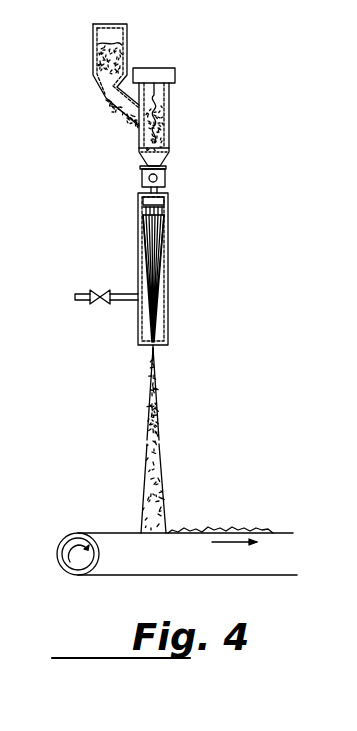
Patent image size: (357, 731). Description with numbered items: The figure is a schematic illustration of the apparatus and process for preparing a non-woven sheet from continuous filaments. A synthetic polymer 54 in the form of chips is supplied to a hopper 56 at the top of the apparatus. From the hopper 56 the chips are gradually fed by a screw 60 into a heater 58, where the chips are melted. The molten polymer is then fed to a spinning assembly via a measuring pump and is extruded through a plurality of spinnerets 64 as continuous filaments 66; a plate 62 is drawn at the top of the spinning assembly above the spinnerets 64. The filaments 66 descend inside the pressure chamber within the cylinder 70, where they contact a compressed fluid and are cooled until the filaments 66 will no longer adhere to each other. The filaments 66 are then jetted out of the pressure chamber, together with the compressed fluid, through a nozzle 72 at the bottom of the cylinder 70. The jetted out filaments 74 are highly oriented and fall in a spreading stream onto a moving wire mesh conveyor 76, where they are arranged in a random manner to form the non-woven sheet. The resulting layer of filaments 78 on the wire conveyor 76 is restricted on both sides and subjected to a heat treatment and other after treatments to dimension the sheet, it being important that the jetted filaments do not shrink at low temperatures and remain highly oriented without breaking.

The synthetic polymer 54 is at (112, 60).
The hopper 56 is at (127, 42).
The heater 58 is at (168, 148).
The screw 60 is at (165, 107).
The plate 62 is at (167, 200).
The spinnerets 64 is at (165, 212).
The filaments 66 is at (152, 250).
The cylinder 70 is at (167, 308).
The nozzle 72 is at (153, 348).
The jetted out filaments 74 is at (160, 438).
The wire mesh conveyor 76 is at (112, 532).
The layer of filaments 78 is at (220, 530).